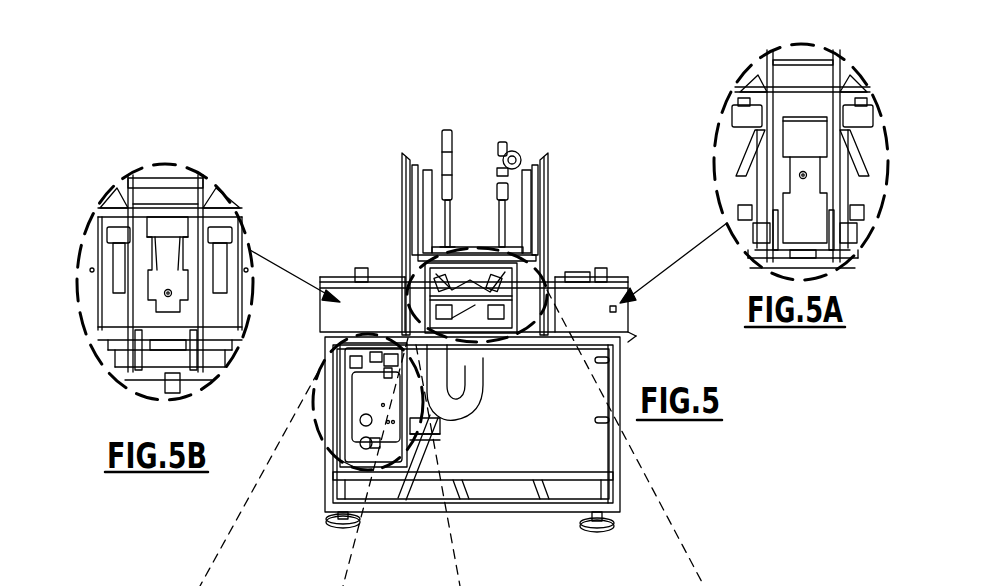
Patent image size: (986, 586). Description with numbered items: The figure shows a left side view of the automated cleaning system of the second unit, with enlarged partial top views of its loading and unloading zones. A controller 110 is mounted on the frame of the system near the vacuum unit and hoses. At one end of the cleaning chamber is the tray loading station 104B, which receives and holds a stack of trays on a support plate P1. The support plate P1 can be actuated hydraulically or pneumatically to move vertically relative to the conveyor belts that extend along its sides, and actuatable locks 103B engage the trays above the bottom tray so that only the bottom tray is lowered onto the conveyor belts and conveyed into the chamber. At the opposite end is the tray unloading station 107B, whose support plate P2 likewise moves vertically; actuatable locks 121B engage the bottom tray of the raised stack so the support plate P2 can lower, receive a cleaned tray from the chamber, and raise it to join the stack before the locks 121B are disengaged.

In FIG. 5, the controller 110 is at (330, 468).
In FIG. 5B, the tray unloading station 107B is at (242, 178).
In FIG. 5A, the tray loading station 104B is at (732, 64).
In FIG. 5B, the actuatable locks 121B is at (200, 228).
In FIG. 5B, the support plate P2 is at (162, 263).
In FIG. 5A, the actuatable locks 103B is at (775, 106).
In FIG. 5A, the support plate P1 is at (812, 142).